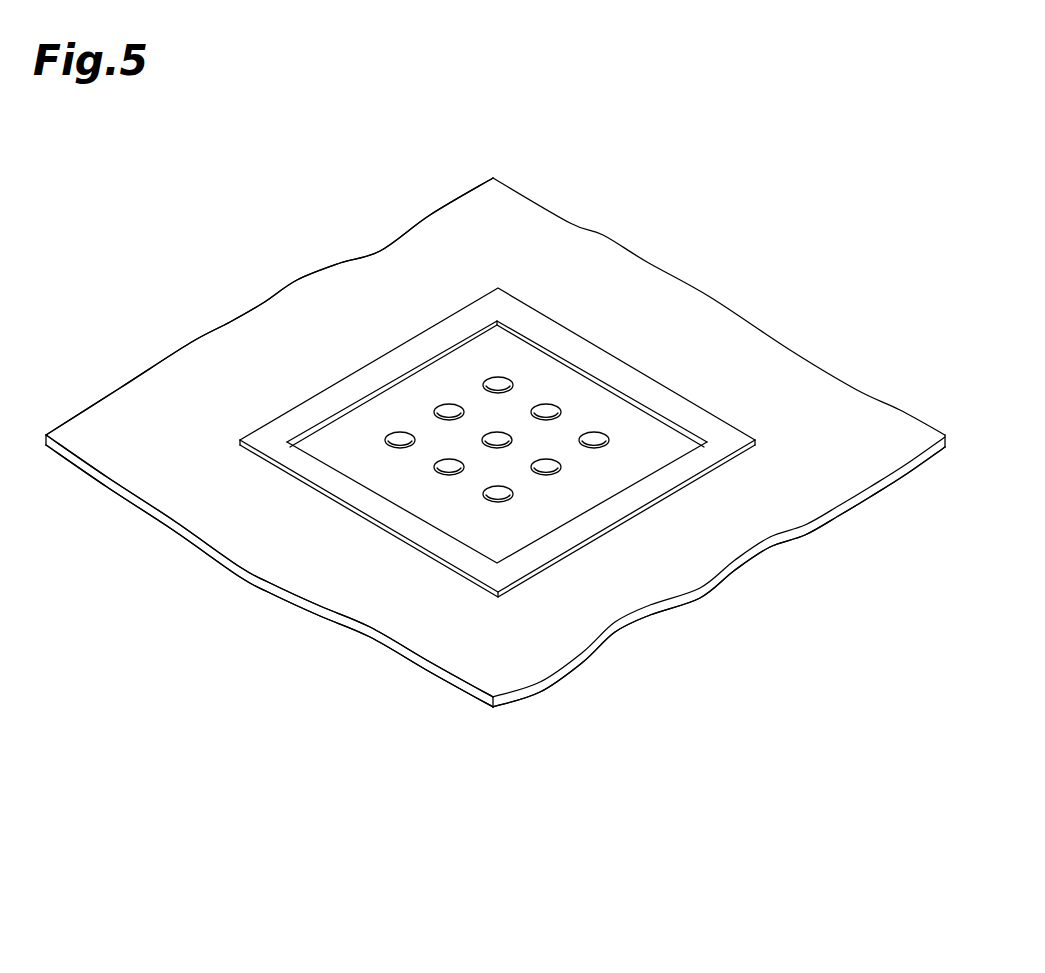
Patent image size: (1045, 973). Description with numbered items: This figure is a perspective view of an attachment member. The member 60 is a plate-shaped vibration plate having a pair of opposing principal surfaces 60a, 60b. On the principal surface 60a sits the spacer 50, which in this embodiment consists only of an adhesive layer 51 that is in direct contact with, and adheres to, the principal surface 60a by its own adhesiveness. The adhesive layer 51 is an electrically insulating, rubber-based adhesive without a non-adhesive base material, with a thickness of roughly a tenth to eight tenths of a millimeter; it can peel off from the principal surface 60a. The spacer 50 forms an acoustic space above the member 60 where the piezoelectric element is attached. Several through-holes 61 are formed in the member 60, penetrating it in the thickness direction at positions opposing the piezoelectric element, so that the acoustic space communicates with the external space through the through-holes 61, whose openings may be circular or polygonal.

The spacer 50 is at (618, 358).
The adhesive layer 51 is at (323, 390).
The member 60 is at (828, 355).
The principal surface 60a is at (323, 562).
The principal surface 60b is at (392, 603).
The through-hole 61 is at (447, 403).